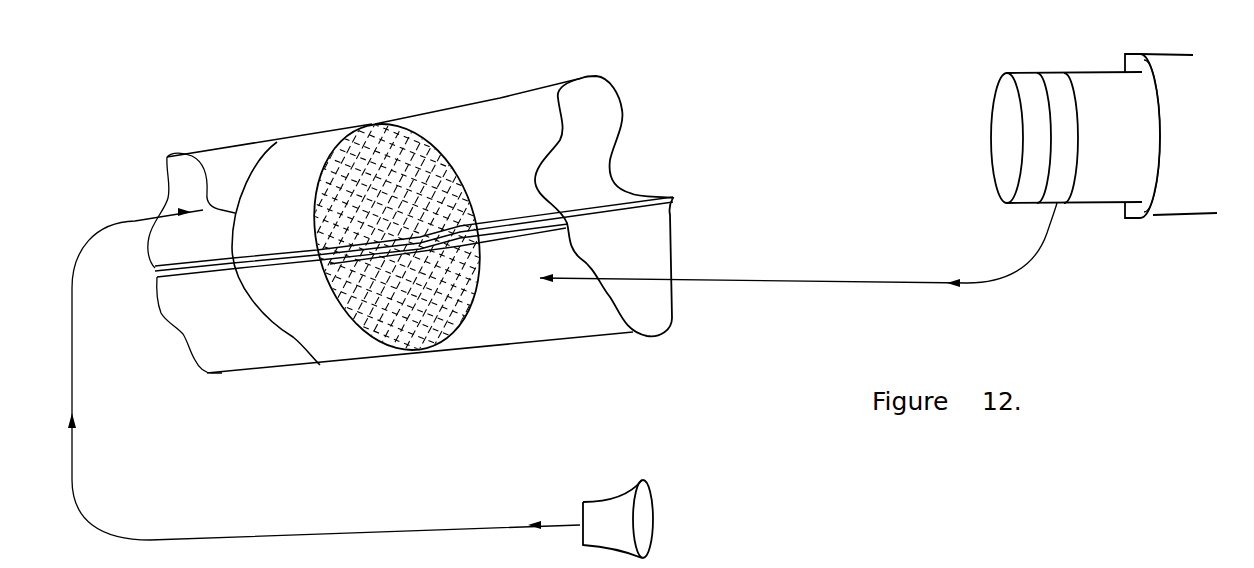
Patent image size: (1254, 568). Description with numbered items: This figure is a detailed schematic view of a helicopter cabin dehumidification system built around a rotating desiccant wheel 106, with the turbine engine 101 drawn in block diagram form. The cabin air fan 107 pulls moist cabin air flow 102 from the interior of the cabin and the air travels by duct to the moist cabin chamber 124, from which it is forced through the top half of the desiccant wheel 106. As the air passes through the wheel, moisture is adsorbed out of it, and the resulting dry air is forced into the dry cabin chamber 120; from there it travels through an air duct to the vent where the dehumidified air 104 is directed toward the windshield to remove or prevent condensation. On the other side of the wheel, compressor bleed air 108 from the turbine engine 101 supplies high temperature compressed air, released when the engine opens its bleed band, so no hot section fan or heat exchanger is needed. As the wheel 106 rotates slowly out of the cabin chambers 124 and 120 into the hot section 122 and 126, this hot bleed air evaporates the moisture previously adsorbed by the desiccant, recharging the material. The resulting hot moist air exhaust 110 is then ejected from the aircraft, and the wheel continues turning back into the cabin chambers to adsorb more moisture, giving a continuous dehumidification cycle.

The turbine engine 101 is at (1071, 136).
The moist cabin air flow 102 is at (660, 516).
The dehumidified air 104 is at (510, 153).
The desiccant wheel 106 is at (281, 193).
The cabin air fan 107 is at (602, 498).
The compressor bleed air 108 is at (798, 245).
The hot moist air exhaust 110 is at (230, 322).
The dry cabin chamber 120 is at (585, 110).
The hot section 122 is at (610, 250).
The moist cabin chamber 124 is at (182, 182).
The hot section 126 is at (223, 347).